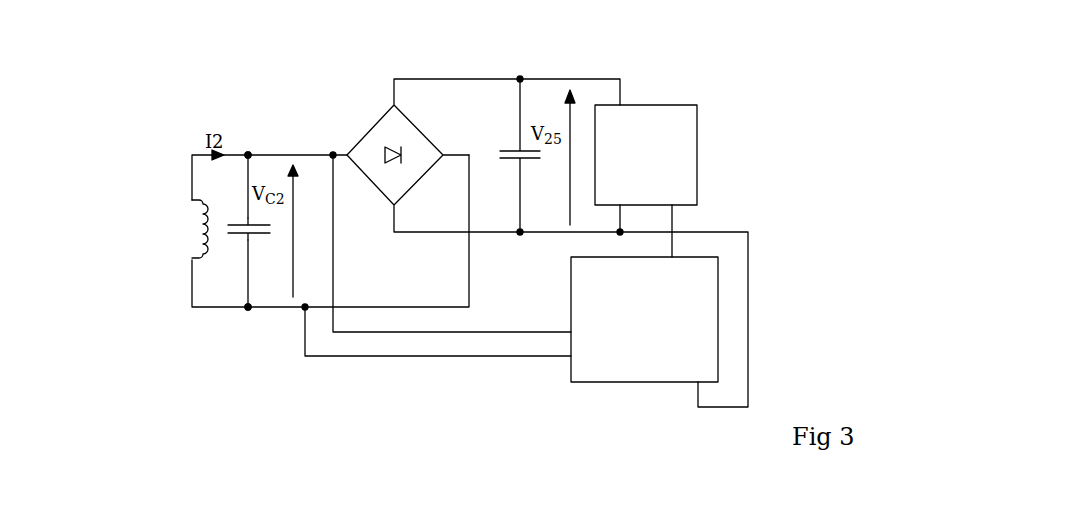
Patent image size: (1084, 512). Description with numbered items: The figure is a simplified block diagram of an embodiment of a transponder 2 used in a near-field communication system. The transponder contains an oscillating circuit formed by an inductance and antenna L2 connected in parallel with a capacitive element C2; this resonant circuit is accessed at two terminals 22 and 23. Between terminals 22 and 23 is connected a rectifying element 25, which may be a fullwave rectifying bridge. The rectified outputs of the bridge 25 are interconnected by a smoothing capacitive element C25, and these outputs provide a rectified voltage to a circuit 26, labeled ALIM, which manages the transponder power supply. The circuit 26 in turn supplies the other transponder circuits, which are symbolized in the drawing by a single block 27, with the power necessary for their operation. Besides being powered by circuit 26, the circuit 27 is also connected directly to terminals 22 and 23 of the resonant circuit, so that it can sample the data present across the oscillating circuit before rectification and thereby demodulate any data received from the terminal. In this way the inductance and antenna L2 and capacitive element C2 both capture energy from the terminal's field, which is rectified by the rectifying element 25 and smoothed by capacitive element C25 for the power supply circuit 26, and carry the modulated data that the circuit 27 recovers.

The transponder 2 is at (303, 400).
The terminal of the oscillating circuit 22 is at (249, 153).
The terminal of the oscillating circuit 23 is at (248, 309).
The rectifying element 25 is at (371, 136).
The circuit for managing the transponder power supply 26 is at (641, 105).
The block of other transponder circuits 27 is at (612, 383).
The inductance and antenna L2 is at (185, 229).
The capacitive element C2 is at (245, 240).
The smoothing capacitive element C25 is at (511, 155).